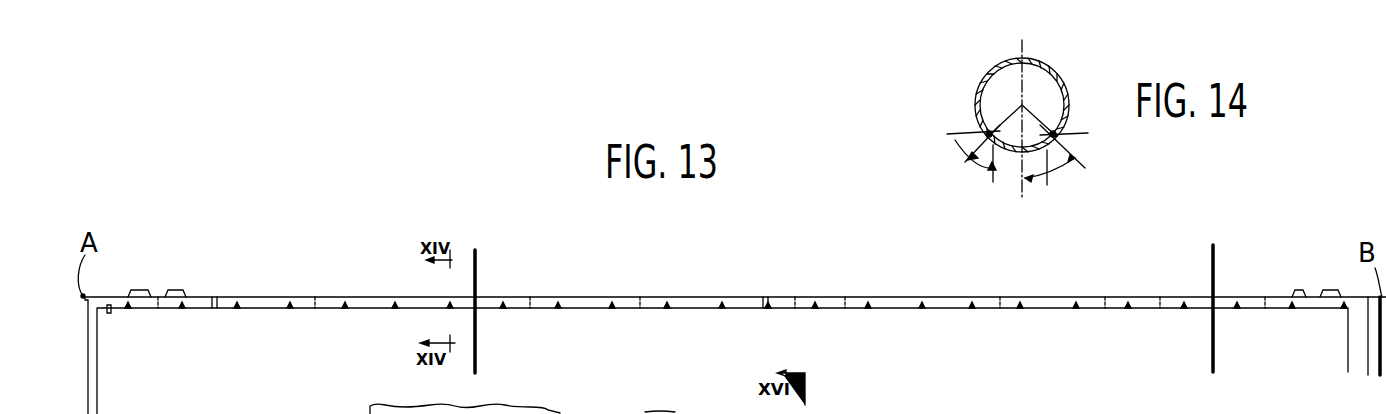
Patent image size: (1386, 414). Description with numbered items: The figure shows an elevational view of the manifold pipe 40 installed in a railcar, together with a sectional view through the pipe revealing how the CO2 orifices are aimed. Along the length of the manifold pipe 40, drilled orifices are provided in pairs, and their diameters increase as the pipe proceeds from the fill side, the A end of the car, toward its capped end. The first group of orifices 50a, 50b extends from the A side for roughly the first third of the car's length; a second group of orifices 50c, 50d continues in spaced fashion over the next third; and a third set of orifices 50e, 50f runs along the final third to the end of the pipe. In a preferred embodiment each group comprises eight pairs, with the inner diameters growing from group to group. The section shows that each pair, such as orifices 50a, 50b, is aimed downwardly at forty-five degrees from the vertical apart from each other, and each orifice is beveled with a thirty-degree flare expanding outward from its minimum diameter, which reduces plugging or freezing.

In FIG. 13, the manifold pipe 40 is at (262, 297).
In FIG. 14, the manifold pipe 40 is at (1070, 100).
In FIG. 13, the orifice 50a is at (127, 297).
In FIG. 14, the orifice 50a is at (1060, 132).
In FIG. 13, the orifice 50b is at (190, 297).
In FIG. 14, the orifice 50b is at (992, 132).
In FIG. 13, the orifice 50c is at (558, 297).
In FIG. 13, the orifice 50d is at (613, 297).
In FIG. 13, the orifice 50e is at (972, 297).
In FIG. 13, the orifice 50f is at (1022, 297).